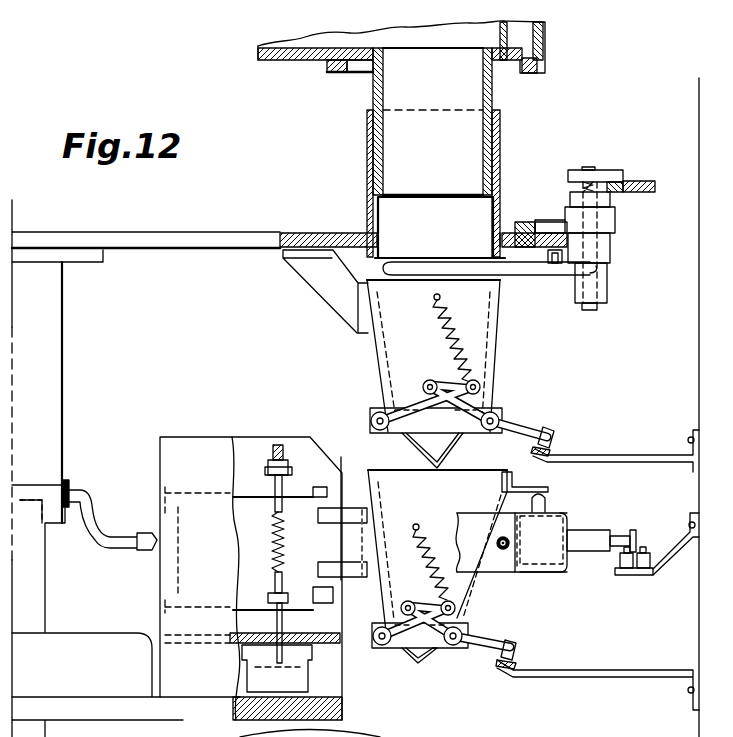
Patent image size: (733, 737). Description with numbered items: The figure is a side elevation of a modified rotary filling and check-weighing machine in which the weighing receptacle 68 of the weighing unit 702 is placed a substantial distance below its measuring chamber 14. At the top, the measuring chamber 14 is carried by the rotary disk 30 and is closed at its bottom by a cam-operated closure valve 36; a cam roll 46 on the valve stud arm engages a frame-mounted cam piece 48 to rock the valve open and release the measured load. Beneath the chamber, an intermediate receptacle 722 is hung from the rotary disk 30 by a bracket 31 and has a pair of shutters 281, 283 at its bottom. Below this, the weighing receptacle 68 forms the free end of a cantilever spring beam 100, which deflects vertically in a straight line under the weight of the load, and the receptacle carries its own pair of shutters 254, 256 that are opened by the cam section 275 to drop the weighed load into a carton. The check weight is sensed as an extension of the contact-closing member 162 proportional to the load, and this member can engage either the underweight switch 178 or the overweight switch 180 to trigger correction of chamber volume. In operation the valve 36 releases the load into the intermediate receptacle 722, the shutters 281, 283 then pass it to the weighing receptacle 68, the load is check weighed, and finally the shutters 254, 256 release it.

The measuring chamber 14 is at (433, 152).
The bottom closure valve 36 is at (440, 266).
The rotary disk 30 is at (202, 243).
The bracket 31 is at (318, 282).
The cam roll 46 is at (617, 196).
The cam piece 48 is at (638, 180).
The intermediate receptacle 722 is at (494, 340).
The shutter 281 is at (410, 444).
The shutter 283 is at (460, 438).
The cantilever spring beam 100 is at (253, 455).
The weighing unit 702 is at (596, 499).
The contact-closing member 162 is at (652, 525).
The underweight circuit-closing switch 178 is at (625, 565).
The overweight circuit-closing switch 180 is at (642, 565).
The weighing receptacle 68 is at (474, 586).
The shutter 254 is at (403, 656).
The shutter 256 is at (430, 656).
The cam section 275 is at (520, 665).